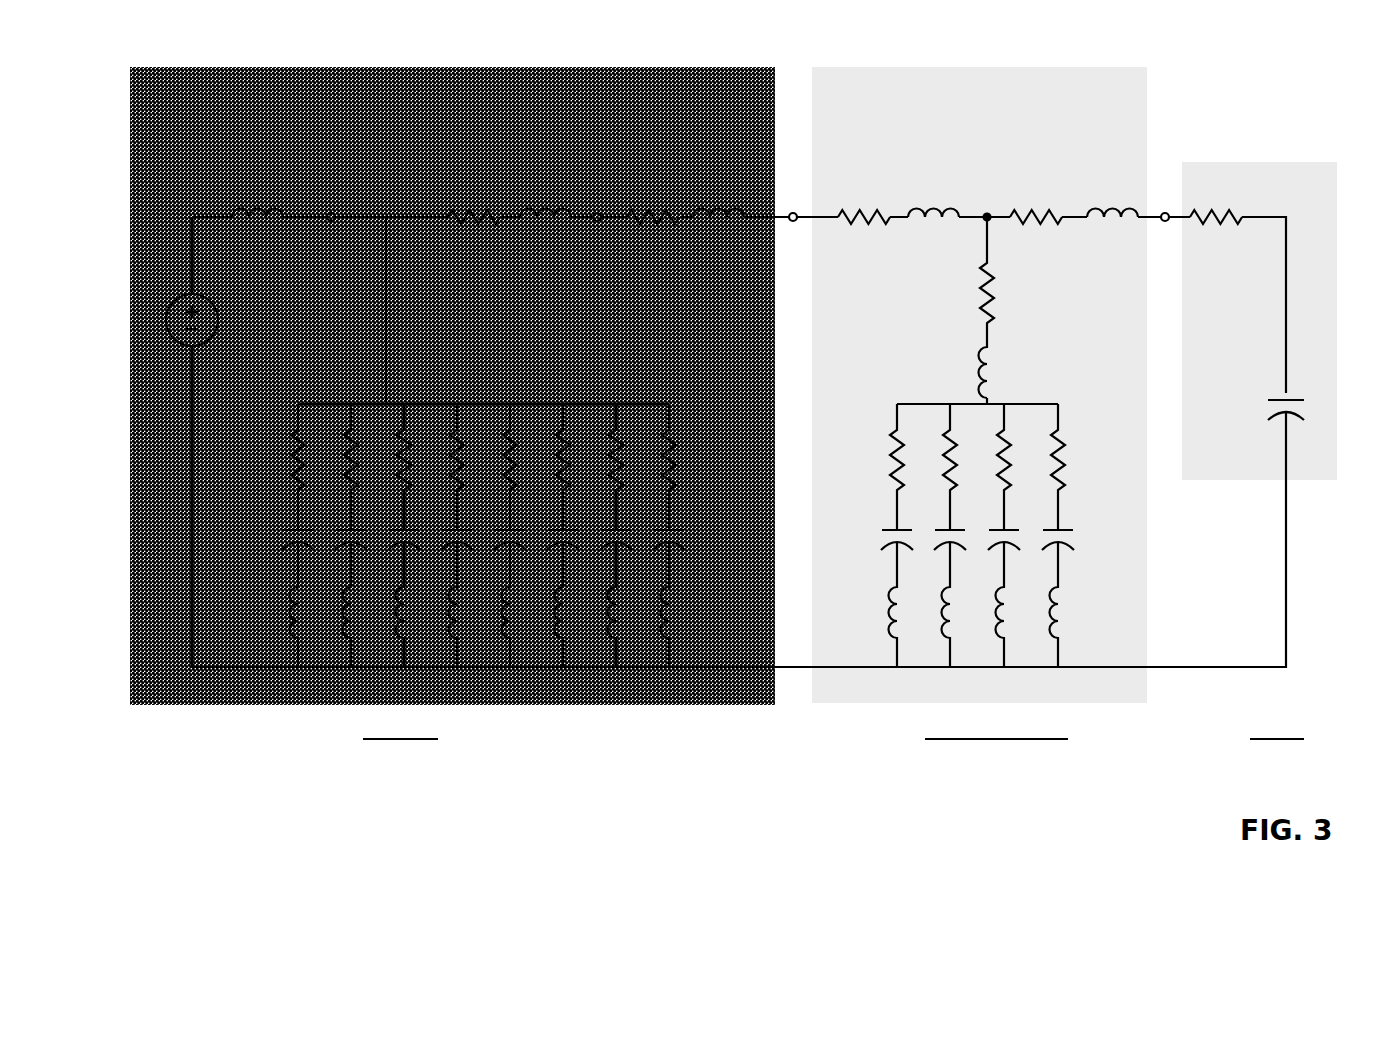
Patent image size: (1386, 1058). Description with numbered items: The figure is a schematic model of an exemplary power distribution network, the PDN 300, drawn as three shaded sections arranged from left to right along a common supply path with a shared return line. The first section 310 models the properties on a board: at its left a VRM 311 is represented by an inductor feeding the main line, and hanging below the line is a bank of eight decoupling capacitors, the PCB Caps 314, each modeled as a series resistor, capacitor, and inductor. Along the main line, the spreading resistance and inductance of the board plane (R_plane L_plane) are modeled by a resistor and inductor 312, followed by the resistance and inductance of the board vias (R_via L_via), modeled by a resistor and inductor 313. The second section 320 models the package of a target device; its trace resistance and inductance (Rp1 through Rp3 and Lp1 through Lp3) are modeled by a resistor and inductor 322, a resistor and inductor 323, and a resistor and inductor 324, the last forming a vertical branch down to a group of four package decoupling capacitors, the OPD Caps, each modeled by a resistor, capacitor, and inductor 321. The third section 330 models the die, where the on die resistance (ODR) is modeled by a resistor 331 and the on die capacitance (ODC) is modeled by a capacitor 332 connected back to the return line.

The PDN 300 is at (262, 57).
The first section 310 is at (452, 404).
The VRM 311 is at (261, 219).
The resistor and inductor 312 is at (491, 209).
The resistor and inductor 313 is at (757, 403).
The decoupling capacitors 314 is at (303, 389).
The second section 320 is at (979, 404).
The resistor, capacitor, and inductor 321 is at (1012, 535).
The resistor and inductor 322 is at (827, 405).
The resistor and inductor 323 is at (1074, 208).
The resistor and inductor 324 is at (988, 307).
The third section 330 is at (1268, 451).
The resistor 331 is at (1246, 217).
The capacitor 332 is at (1256, 425).